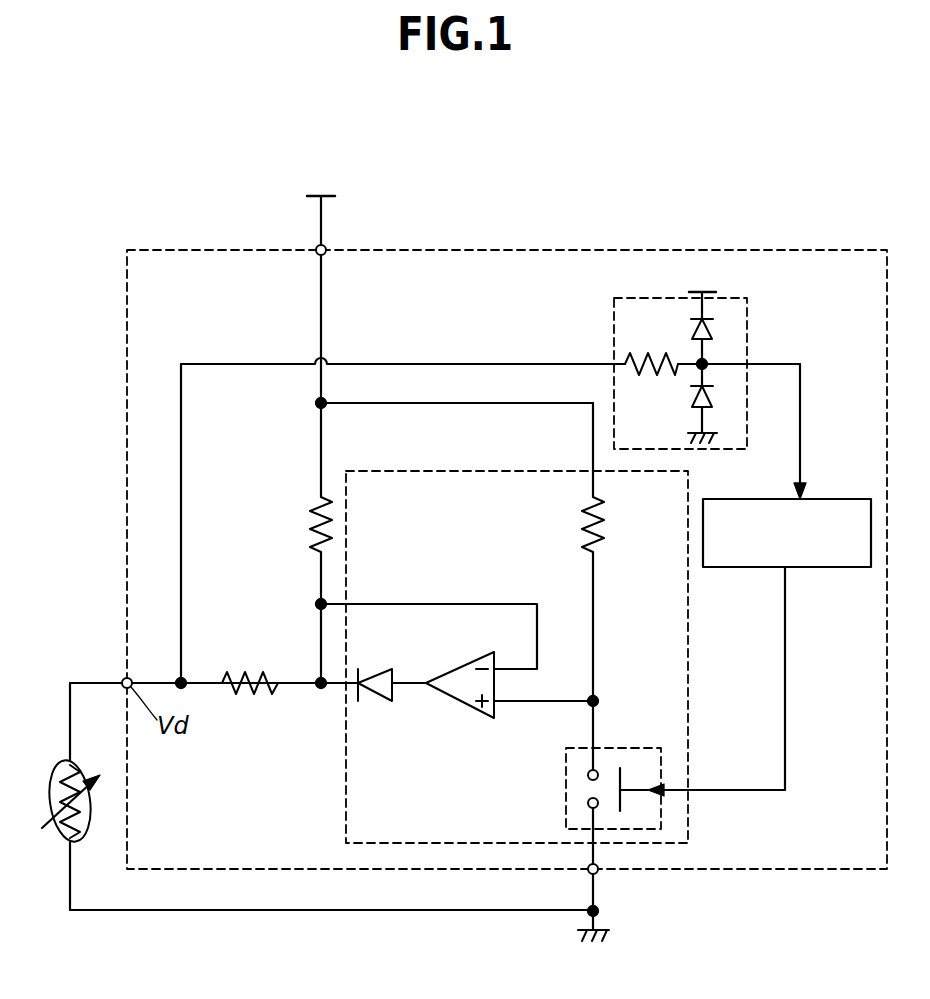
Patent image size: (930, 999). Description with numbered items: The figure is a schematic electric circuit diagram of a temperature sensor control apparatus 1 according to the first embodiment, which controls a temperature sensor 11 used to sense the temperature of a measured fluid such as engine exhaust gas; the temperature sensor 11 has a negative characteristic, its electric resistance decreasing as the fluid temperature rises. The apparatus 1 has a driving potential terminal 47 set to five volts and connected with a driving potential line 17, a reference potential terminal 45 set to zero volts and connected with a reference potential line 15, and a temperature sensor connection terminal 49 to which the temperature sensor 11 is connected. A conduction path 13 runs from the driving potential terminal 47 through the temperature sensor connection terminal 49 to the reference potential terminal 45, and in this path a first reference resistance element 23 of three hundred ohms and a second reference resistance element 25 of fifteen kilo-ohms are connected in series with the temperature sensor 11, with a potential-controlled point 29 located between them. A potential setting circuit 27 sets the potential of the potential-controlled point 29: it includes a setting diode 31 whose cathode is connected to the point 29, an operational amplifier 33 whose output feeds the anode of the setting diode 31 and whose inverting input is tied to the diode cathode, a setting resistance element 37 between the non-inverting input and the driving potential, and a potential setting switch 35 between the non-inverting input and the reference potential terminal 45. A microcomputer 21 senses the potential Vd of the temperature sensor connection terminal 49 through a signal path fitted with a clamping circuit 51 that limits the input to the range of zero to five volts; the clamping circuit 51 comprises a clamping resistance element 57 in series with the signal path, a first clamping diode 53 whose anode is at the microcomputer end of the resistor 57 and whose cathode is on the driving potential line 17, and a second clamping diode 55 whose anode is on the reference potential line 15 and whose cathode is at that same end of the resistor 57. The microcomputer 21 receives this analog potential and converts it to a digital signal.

The temperature sensor control apparatus 1 is at (695, 205).
The temperature sensor 11 is at (62, 773).
The conduction path 13 is at (318, 576).
The reference potential line 15 is at (600, 931).
The driving potential line 17 is at (336, 198).
The microcomputer 21 is at (835, 499).
The first reference resistance element 23 is at (255, 672).
The second reference resistance element 25 is at (319, 500).
The potential setting circuit 27 is at (460, 471).
The potential-controlled point 29 is at (318, 690).
The setting diode 31 is at (372, 668).
The operational amplifier 33 is at (452, 672).
The potential setting switch 35 is at (629, 748).
The setting resistance element 37 is at (589, 522).
The reference potential terminal 45 is at (598, 873).
The driving potential terminal 47 is at (325, 246).
The temperature sensor connection terminal 49 is at (124, 680).
The clamping circuit 51 is at (613, 318).
The first clamping diode 53 is at (712, 326).
The second clamping diode 55 is at (692, 402).
The clamping resistance element 57 is at (662, 360).